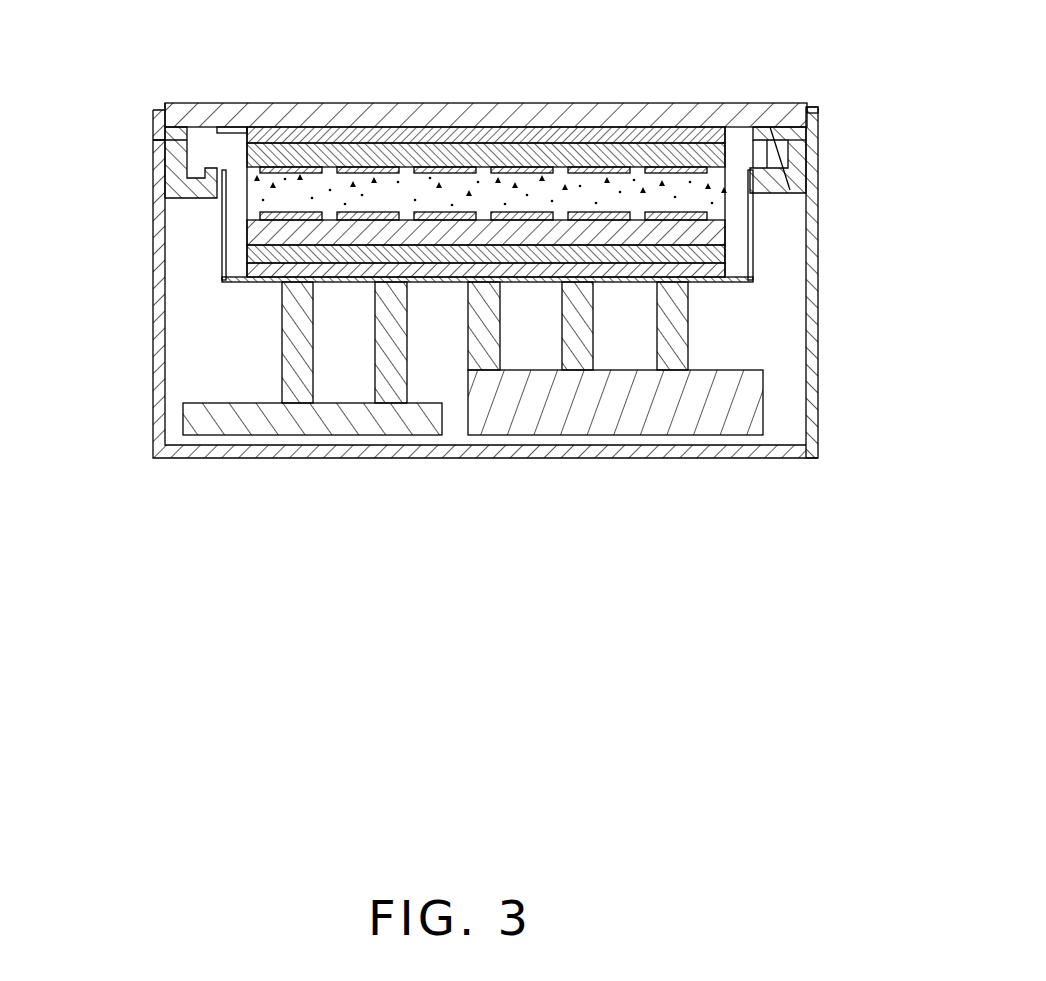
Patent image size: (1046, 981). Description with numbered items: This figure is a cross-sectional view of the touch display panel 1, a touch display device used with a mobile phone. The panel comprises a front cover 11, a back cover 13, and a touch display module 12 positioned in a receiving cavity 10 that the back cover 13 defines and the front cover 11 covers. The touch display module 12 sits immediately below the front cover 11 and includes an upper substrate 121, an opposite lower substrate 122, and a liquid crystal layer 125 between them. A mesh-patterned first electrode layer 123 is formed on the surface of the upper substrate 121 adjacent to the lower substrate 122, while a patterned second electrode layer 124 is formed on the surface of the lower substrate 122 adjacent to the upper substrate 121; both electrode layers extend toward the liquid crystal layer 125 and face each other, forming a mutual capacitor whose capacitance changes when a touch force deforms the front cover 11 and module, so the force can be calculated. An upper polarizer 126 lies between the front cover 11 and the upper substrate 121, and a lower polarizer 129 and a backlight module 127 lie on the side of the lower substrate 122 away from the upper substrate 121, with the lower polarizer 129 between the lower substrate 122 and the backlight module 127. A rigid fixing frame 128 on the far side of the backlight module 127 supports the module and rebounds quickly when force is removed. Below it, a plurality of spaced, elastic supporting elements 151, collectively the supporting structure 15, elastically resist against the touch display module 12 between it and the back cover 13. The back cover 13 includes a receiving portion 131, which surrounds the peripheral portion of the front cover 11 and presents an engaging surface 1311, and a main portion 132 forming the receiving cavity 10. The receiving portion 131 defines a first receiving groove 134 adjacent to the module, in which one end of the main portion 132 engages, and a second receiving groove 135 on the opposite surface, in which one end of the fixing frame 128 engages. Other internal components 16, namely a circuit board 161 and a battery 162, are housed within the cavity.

The touch display panel 1 is at (462, 48).
The receiving cavity 10 is at (790, 397).
The front cover 11 is at (632, 110).
The touch display module 12 is at (90, 135).
The upper substrate 121 is at (262, 133).
The lower substrate 122 is at (262, 235).
The first electrode layer 123 is at (262, 155).
The second electrode layer 124 is at (258, 216).
The liquid crystal layer 125 is at (262, 170).
The upper polarizer 126 is at (188, 150).
The backlight module 127 is at (262, 268).
The fixing frame 128 is at (262, 280).
The lower polarizer 129 is at (262, 253).
The back cover 13 is at (278, 450).
The receiving portion 131 is at (817, 108).
The inclined surface 1311 is at (787, 177).
The main portion 132 is at (817, 230).
The first receiving groove 134 is at (798, 138).
The second receiving groove 135 is at (760, 157).
The support pillars 15 is at (693, 318).
The supporting element 151 is at (682, 338).
The other internal components 16 is at (532, 528).
The circuit board 161 is at (390, 423).
The battery 162 is at (575, 417).